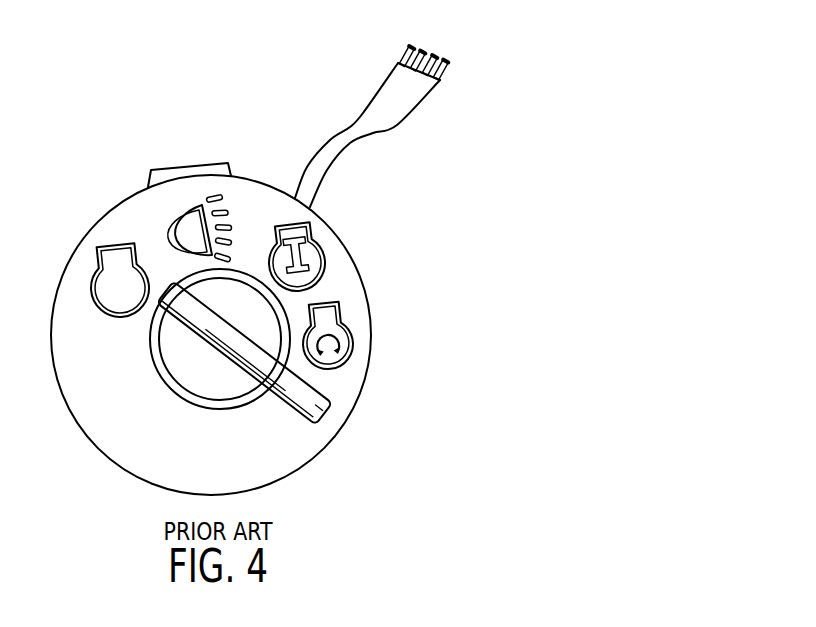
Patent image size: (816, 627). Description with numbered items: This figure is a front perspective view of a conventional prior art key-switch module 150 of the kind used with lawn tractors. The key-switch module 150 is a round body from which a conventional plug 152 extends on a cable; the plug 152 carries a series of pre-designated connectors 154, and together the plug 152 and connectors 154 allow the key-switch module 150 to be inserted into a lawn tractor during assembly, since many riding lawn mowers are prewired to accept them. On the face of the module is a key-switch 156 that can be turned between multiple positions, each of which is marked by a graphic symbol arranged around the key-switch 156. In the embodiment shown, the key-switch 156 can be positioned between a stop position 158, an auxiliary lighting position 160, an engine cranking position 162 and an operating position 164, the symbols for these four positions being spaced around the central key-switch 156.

The key-switch module 150 is at (267, 150).
The plug 152 is at (378, 92).
The connectors 154 is at (445, 72).
The key-switch 156 is at (328, 398).
The stop position 158 is at (94, 268).
The auxiliary lighting position 160 is at (166, 231).
The engine cranking position 162 is at (353, 330).
The operating position 164 is at (321, 253).